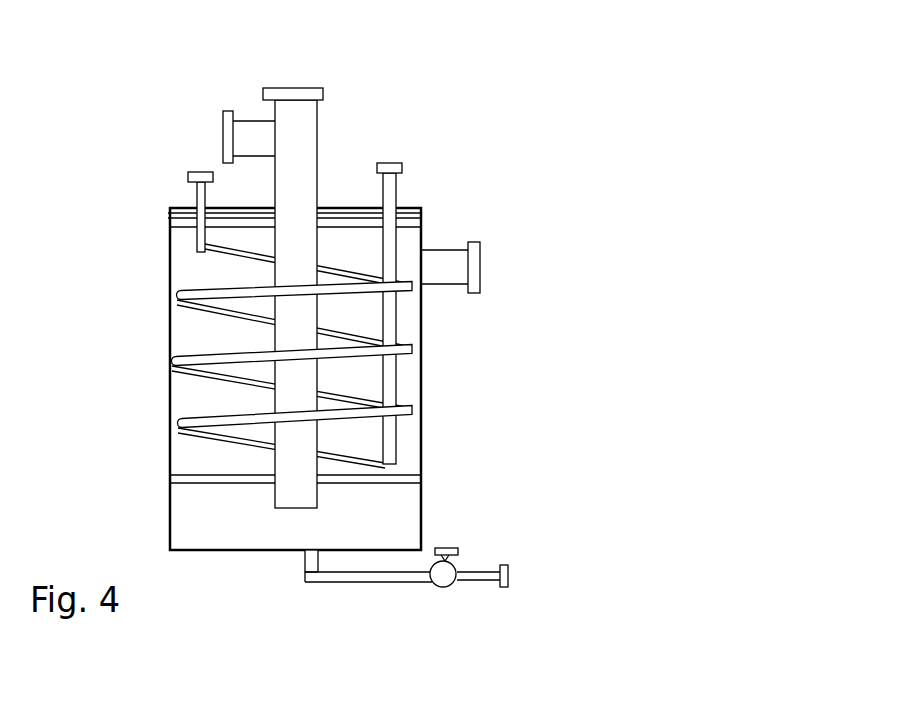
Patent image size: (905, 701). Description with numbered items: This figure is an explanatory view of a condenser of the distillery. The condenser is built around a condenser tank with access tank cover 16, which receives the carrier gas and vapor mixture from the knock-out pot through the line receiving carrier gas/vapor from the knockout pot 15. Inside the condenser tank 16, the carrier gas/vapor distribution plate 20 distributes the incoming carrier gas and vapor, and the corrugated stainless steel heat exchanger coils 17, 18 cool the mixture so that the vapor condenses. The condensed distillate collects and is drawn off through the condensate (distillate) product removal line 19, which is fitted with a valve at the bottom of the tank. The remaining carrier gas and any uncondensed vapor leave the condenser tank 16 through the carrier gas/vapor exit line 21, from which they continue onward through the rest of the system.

The line receiving carrier gas/vapor from the knockout pot 15 is at (237, 102).
The condenser tank with access tank cover 16 is at (423, 228).
The corrugated stainless steel heat exchanger coil 17 is at (373, 165).
The corrugated stainless steel heat exchanger coil 18 is at (193, 202).
The condensate (distillate) product removal line 19 is at (373, 582).
The carrier gas/vapor distribution plate 20 is at (427, 476).
The carrier gas/vapor exit line 21 is at (447, 287).